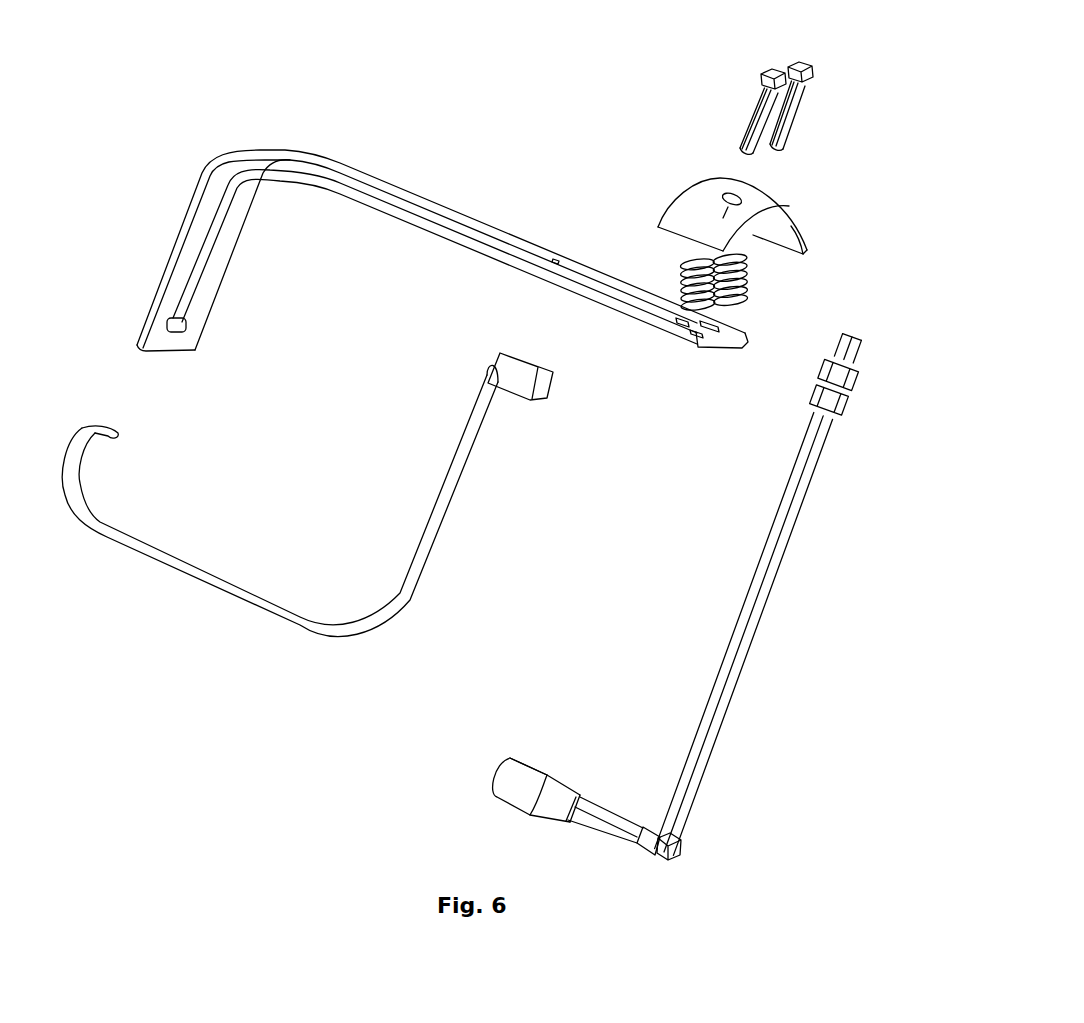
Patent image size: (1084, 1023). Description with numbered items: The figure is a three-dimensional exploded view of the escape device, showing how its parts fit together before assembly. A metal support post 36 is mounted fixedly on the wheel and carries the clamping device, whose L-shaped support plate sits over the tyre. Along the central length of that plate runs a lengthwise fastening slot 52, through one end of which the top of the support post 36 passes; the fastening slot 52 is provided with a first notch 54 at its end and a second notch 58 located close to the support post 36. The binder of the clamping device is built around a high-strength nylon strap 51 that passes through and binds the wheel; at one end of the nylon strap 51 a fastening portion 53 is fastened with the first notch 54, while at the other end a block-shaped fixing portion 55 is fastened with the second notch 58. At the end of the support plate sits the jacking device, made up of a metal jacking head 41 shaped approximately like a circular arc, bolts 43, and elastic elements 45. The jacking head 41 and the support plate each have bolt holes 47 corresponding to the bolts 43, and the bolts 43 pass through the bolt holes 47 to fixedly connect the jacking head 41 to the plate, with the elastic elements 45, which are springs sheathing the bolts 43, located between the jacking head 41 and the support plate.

The support post 36 is at (782, 513).
The jacking head 41 is at (806, 232).
The bolt 43 is at (797, 110).
The elastic element 45 is at (742, 295).
The bolt hole 47 is at (697, 335).
The nylon strap 51 is at (210, 585).
The fastening slot 52 is at (393, 197).
The fastening portion 53 is at (115, 435).
The first notch 54 is at (187, 324).
The fixing portion 55 is at (513, 372).
The second notch 58 is at (557, 262).